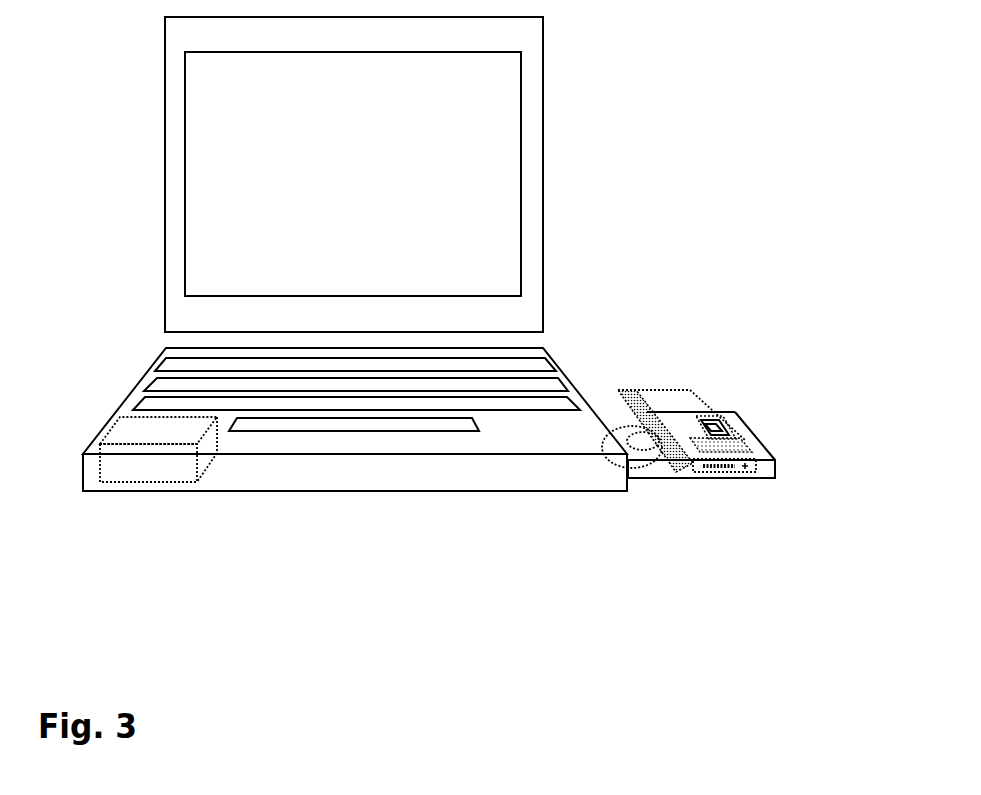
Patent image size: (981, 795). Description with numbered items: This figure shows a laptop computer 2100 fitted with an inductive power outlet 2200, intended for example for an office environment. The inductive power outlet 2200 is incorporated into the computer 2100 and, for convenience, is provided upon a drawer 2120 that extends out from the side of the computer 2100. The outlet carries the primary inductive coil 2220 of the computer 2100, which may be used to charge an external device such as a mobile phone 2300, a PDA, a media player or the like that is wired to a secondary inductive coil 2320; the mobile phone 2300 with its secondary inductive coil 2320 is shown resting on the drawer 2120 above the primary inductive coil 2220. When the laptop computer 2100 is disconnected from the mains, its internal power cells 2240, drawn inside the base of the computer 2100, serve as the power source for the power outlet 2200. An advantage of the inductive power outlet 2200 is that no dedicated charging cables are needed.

The computer 2100 is at (536, 127).
The drawer 2120 is at (603, 417).
The inductive power outlet 2200 is at (648, 502).
The primary inductive coil 2220 is at (657, 456).
The internal power cells 2240 is at (142, 472).
The mobile phone 2300 is at (652, 398).
The secondary inductive coil 2320 is at (707, 417).